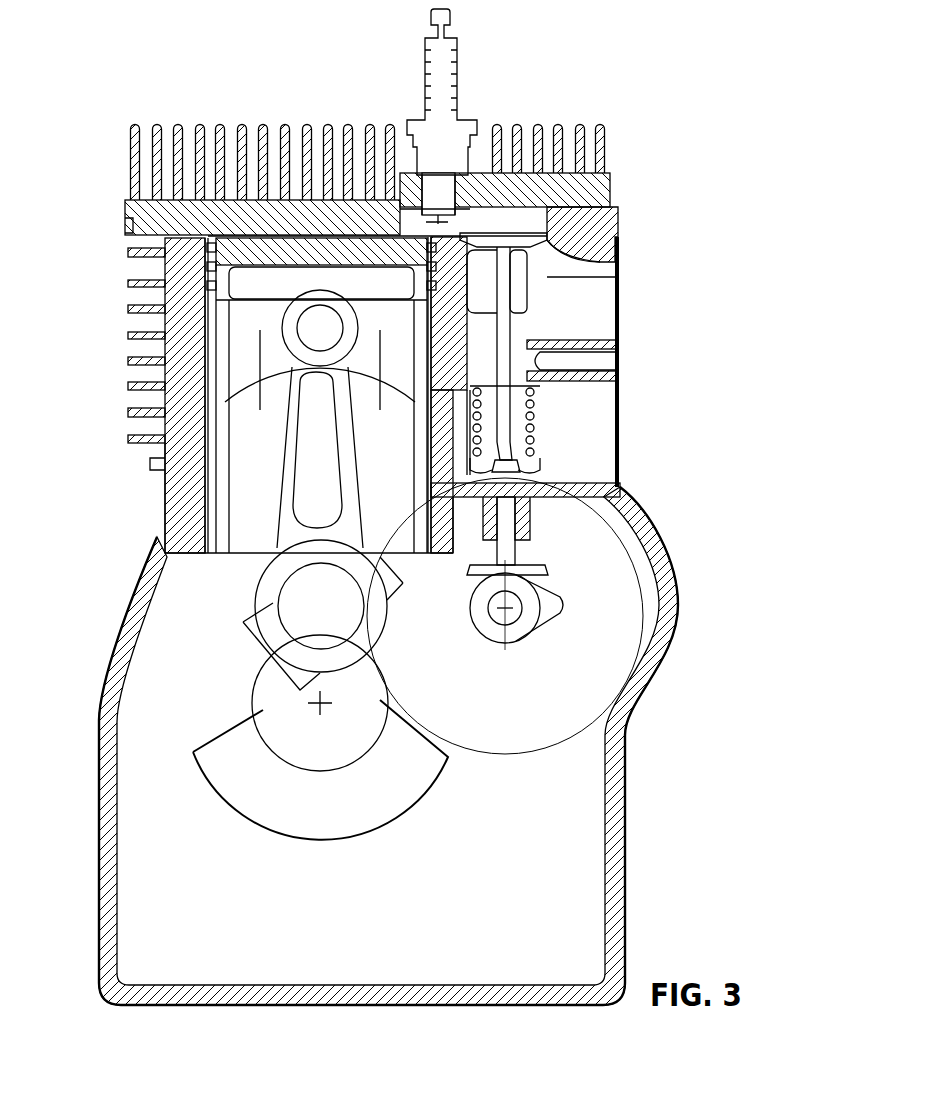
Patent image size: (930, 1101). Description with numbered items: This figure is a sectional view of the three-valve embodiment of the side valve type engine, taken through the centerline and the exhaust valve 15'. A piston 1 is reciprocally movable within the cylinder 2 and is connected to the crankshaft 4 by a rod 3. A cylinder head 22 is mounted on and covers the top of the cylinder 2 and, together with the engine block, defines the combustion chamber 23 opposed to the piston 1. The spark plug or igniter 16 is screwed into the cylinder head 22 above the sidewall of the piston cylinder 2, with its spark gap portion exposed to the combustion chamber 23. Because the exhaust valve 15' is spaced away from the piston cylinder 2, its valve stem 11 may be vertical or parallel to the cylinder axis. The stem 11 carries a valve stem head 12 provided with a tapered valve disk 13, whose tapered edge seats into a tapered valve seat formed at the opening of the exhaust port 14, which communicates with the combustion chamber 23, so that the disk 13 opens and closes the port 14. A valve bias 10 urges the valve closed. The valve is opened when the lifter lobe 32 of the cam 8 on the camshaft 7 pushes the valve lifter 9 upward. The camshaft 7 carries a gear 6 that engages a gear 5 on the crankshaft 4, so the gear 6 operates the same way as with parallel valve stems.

The piston 1 is at (160, 267).
The cylinder 2 is at (178, 353).
The rod 3 is at (312, 500).
The crankshaft 4 is at (255, 690).
The gear 5 is at (368, 758).
The gear 6 is at (538, 752).
The camshaft 7 is at (512, 620).
The cam 8 is at (547, 630).
The valve lifter 9 is at (543, 573).
The valve bias 10 is at (530, 433).
The valve stem 11 is at (500, 368).
The valve stem head 12 is at (523, 250).
The tapered valve disk 13 is at (547, 238).
The exhaust port 14 is at (582, 322).
The exhaust valve 15' is at (600, 216).
The igniter 16 is at (462, 72).
The cylinder head 22 is at (125, 230).
The combustion chamber 23 is at (380, 208).
The lifter lobe 32 is at (567, 603).